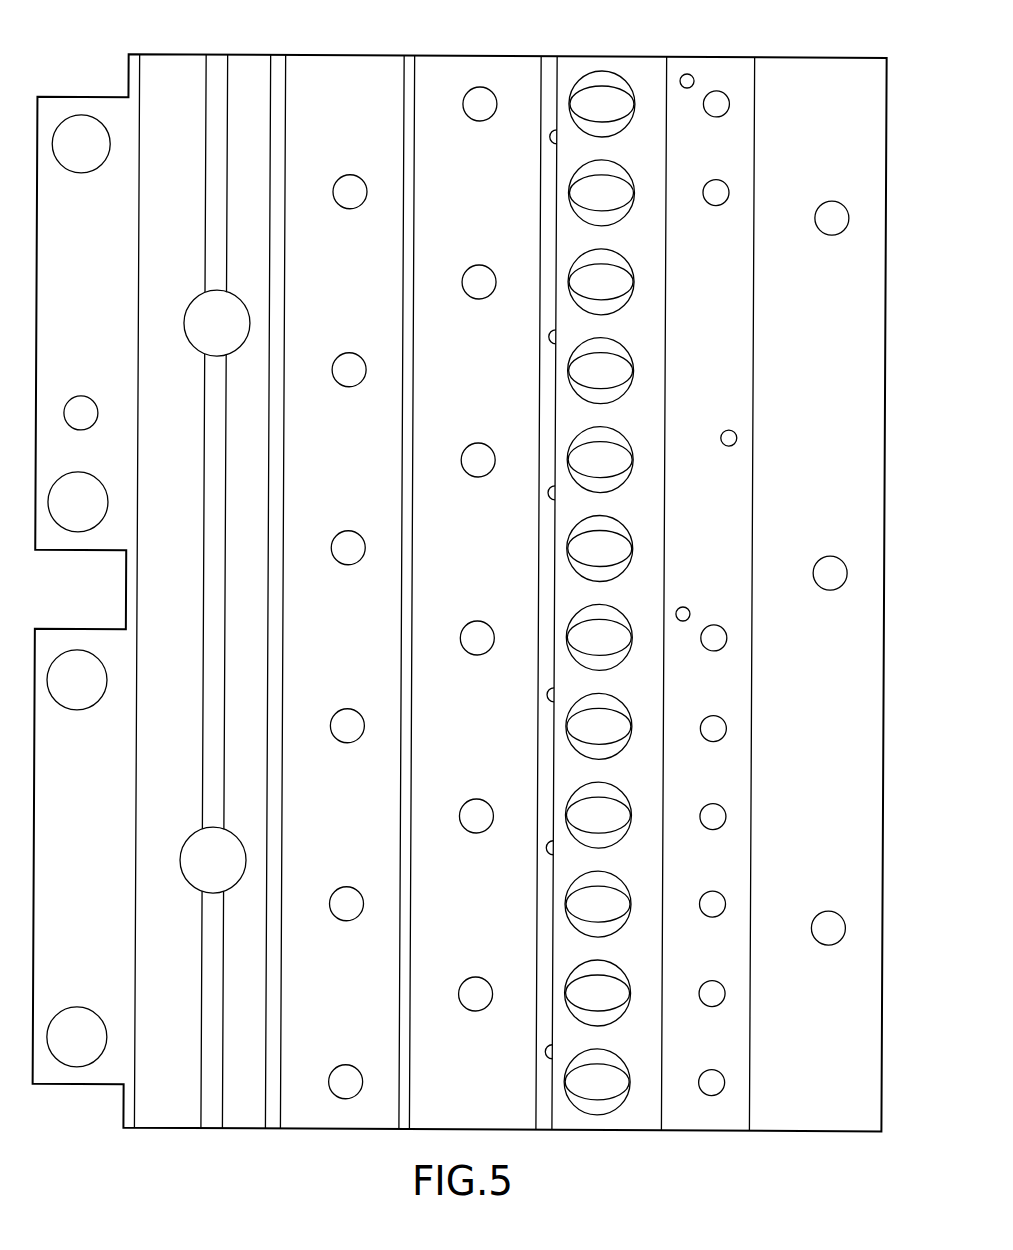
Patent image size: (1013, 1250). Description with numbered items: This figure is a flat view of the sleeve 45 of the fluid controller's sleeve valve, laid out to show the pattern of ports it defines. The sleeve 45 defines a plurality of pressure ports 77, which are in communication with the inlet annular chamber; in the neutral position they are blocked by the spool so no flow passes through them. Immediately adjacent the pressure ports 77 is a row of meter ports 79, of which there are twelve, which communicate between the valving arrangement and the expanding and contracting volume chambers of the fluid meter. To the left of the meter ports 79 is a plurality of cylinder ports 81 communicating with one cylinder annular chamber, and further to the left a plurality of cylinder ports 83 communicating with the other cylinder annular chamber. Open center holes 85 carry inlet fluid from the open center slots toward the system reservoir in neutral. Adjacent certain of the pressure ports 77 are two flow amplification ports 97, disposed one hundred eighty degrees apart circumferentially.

The sleeve 45 is at (632, 50).
The pressure ports 77 is at (726, 185).
The meter ports 79 is at (587, 275).
The cylinder ports 81 is at (471, 290).
The cylinder ports 83 is at (357, 370).
The open center holes 85 is at (820, 222).
The flow amplification ports 97 is at (692, 78).